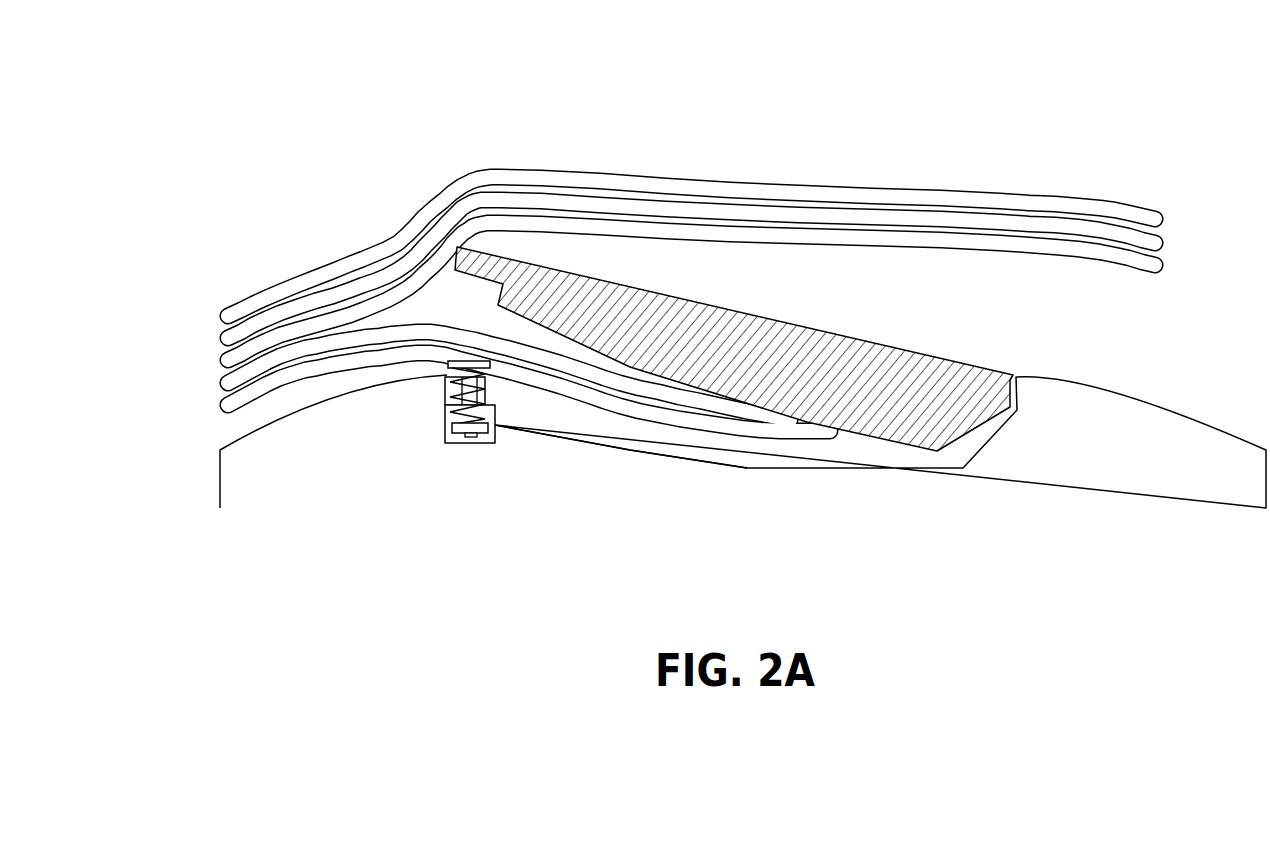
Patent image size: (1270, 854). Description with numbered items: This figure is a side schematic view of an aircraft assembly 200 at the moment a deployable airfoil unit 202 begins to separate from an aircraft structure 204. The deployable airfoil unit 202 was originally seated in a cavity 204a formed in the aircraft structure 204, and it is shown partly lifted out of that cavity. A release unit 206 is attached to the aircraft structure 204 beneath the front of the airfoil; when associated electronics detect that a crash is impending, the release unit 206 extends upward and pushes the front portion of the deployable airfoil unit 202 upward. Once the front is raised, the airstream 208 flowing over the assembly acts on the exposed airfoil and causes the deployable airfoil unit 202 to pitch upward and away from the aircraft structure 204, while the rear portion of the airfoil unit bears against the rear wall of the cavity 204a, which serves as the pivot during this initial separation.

The aircraft assembly 200 is at (270, 184).
The deployable airfoil unit 202 is at (733, 345).
The aircraft structure 204 is at (1175, 465).
The cavity 204a is at (587, 440).
The release unit 206 is at (410, 413).
The airstream 208 is at (248, 311).